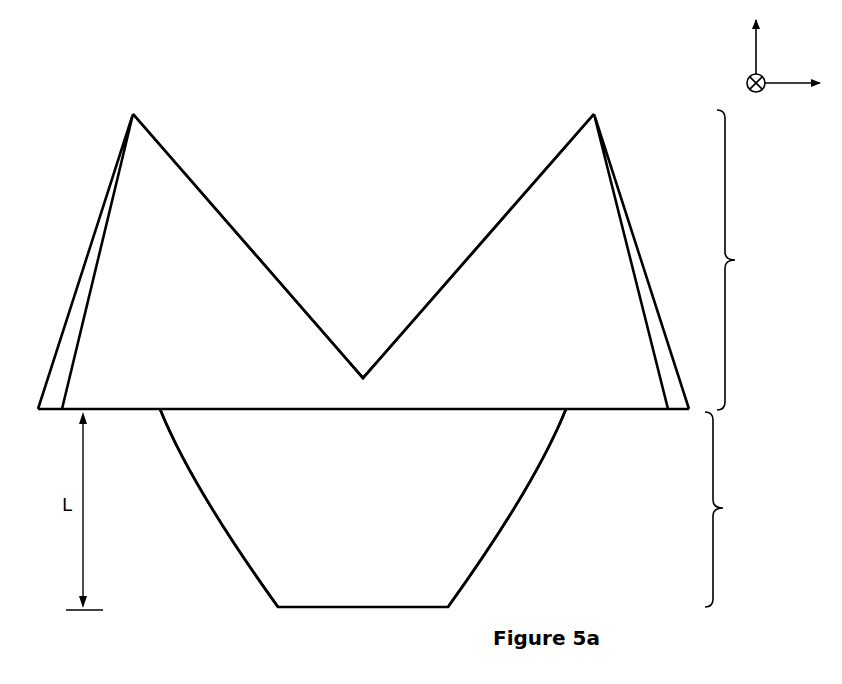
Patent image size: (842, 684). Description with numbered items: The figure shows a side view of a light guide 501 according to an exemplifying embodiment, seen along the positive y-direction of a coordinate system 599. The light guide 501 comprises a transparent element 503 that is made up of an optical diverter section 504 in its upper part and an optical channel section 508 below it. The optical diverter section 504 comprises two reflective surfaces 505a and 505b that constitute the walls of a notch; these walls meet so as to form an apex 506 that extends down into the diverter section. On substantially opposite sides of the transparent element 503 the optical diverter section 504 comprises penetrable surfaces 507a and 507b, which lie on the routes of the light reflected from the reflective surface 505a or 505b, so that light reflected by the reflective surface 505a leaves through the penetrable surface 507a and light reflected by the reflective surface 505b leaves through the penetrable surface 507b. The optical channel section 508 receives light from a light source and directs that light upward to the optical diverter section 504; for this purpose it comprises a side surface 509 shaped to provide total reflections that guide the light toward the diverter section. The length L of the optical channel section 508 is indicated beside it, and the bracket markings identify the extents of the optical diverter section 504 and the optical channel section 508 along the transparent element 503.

The light guide 501 is at (368, 118).
The transparent element 503 is at (363, 246).
The optical diverter section 504 is at (747, 260).
The reflective surface 505a is at (250, 242).
The reflective surface 505b is at (508, 209).
The apex 506 is at (363, 376).
The penetrable surface 507a is at (104, 208).
The penetrable surface 507b is at (650, 310).
The optical channel section 508 is at (464, 508).
The side surface 509 is at (178, 460).
The coordinate system 599 is at (786, 56).